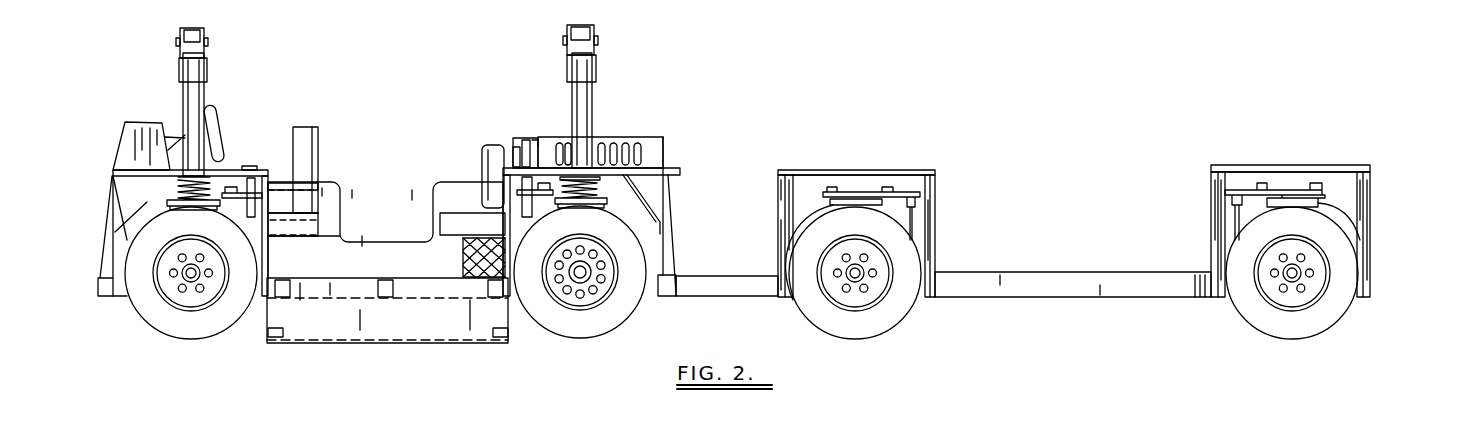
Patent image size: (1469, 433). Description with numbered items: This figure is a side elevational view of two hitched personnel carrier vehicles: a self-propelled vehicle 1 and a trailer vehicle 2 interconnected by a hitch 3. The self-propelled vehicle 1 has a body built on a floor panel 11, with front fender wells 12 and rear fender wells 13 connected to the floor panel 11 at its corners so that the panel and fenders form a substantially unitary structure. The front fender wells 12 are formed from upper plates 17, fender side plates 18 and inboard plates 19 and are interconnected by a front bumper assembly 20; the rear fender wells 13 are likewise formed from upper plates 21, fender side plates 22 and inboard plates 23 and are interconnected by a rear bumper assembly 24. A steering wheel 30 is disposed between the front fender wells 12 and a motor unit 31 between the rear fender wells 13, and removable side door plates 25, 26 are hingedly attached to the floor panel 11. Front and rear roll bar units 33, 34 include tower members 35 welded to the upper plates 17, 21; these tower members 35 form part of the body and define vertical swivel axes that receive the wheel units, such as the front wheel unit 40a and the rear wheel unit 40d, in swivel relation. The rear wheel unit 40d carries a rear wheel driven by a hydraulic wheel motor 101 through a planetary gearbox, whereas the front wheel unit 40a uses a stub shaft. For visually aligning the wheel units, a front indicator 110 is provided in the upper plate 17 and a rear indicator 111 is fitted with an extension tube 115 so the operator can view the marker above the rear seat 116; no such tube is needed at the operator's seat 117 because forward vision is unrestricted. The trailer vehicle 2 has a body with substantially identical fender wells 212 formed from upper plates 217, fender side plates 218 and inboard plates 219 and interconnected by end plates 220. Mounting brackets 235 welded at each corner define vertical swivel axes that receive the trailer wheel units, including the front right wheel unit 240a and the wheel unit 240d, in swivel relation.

The self-propelled personnel carrier vehicle 1 is at (386, 197).
The trailer personnel carrier vehicle 2 is at (1078, 240).
The hitch 3 is at (725, 278).
The floor panel 11 is at (1080, 272).
The front fender wells 12 is at (147, 203).
The rear fender wells 13 is at (643, 230).
The upper plates 17 is at (113, 172).
The fender side plates 18 is at (272, 197).
The inboard plates 19 is at (125, 238).
The front bumper assembly 20 is at (108, 230).
The upper plates 21 is at (635, 210).
The fender side plates 22 is at (488, 168).
The inboard plates 23 is at (665, 240).
The rear bumper assembly 24 is at (670, 258).
The removable side door plate 25 is at (383, 243).
The removable side door plate 26 is at (370, 328).
The steering wheel 30 is at (214, 120).
The motor unit 31 is at (633, 133).
The front roll bar unit 33 is at (182, 72).
The rear roll bar unit 34 is at (593, 63).
The tower members 35 is at (188, 103).
The front wheel unit 40a is at (188, 328).
The rear wheel unit 40d is at (580, 288).
The hydraulic wheel motor 101 is at (580, 283).
The front indicator 110 is at (245, 165).
The rear indicator 111 is at (520, 142).
The extension tube 115 is at (542, 140).
The rear seat 116 is at (488, 170).
The operator's seat 117 is at (302, 133).
The fender wells 212 is at (805, 200).
The upper plates 217 is at (905, 170).
The fender side plates 218 is at (935, 210).
The inboard plates 219 is at (790, 208).
The end plates 220 is at (777, 185).
The mounting brackets 235 is at (788, 293).
The front right wheel unit 240a is at (850, 328).
The wheel unit 240d is at (1311, 315).